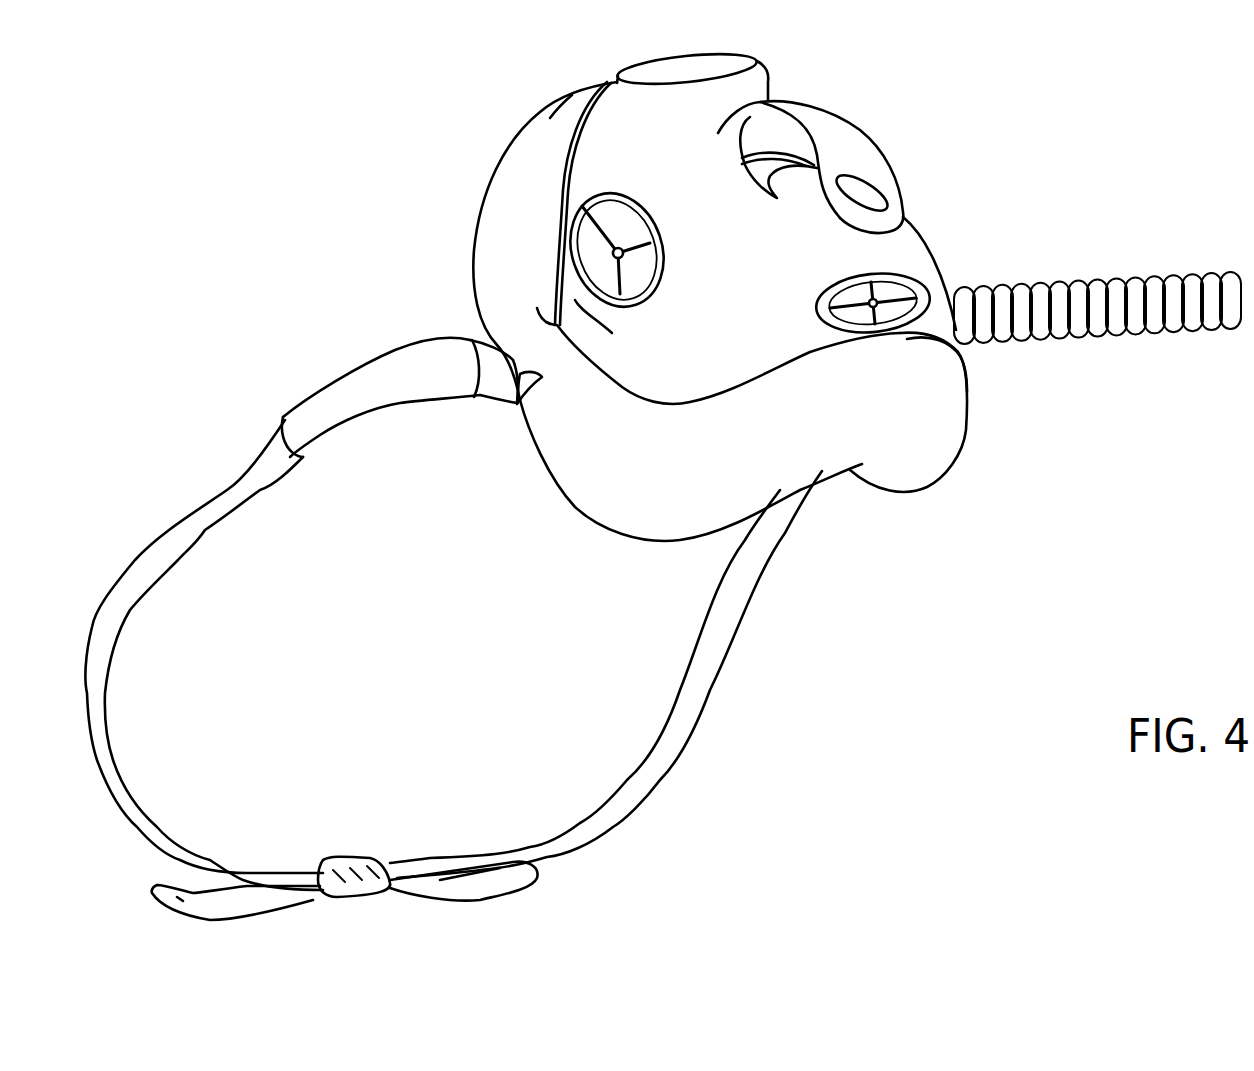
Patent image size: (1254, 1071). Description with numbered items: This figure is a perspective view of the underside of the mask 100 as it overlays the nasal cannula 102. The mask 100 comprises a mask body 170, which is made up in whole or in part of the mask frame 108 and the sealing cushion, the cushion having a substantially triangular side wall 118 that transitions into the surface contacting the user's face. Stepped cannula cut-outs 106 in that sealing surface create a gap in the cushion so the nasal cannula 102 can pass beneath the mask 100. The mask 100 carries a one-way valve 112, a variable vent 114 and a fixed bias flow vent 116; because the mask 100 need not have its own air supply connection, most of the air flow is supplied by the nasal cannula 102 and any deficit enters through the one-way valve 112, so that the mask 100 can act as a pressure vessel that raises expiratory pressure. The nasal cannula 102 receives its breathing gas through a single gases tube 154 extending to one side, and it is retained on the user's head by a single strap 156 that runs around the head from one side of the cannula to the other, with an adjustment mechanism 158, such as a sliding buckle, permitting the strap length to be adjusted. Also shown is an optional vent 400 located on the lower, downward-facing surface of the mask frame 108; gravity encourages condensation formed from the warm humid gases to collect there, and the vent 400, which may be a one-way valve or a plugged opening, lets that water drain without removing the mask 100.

The mask 100 is at (942, 181).
The nasal cannula 102 is at (370, 346).
The cannula cut-outs 106 is at (517, 410).
The mask frame 108 is at (913, 228).
The one-way valve 112 is at (615, 197).
The variable vent 114 is at (843, 123).
The fixed bias flow vent 116 is at (723, 54).
The side wall 118 is at (585, 496).
The gases tube 154 is at (1130, 342).
The strap 156 is at (702, 710).
The adjustment mechanism 158 is at (363, 909).
The mask body 170 is at (962, 472).
The vent 400 is at (893, 297).